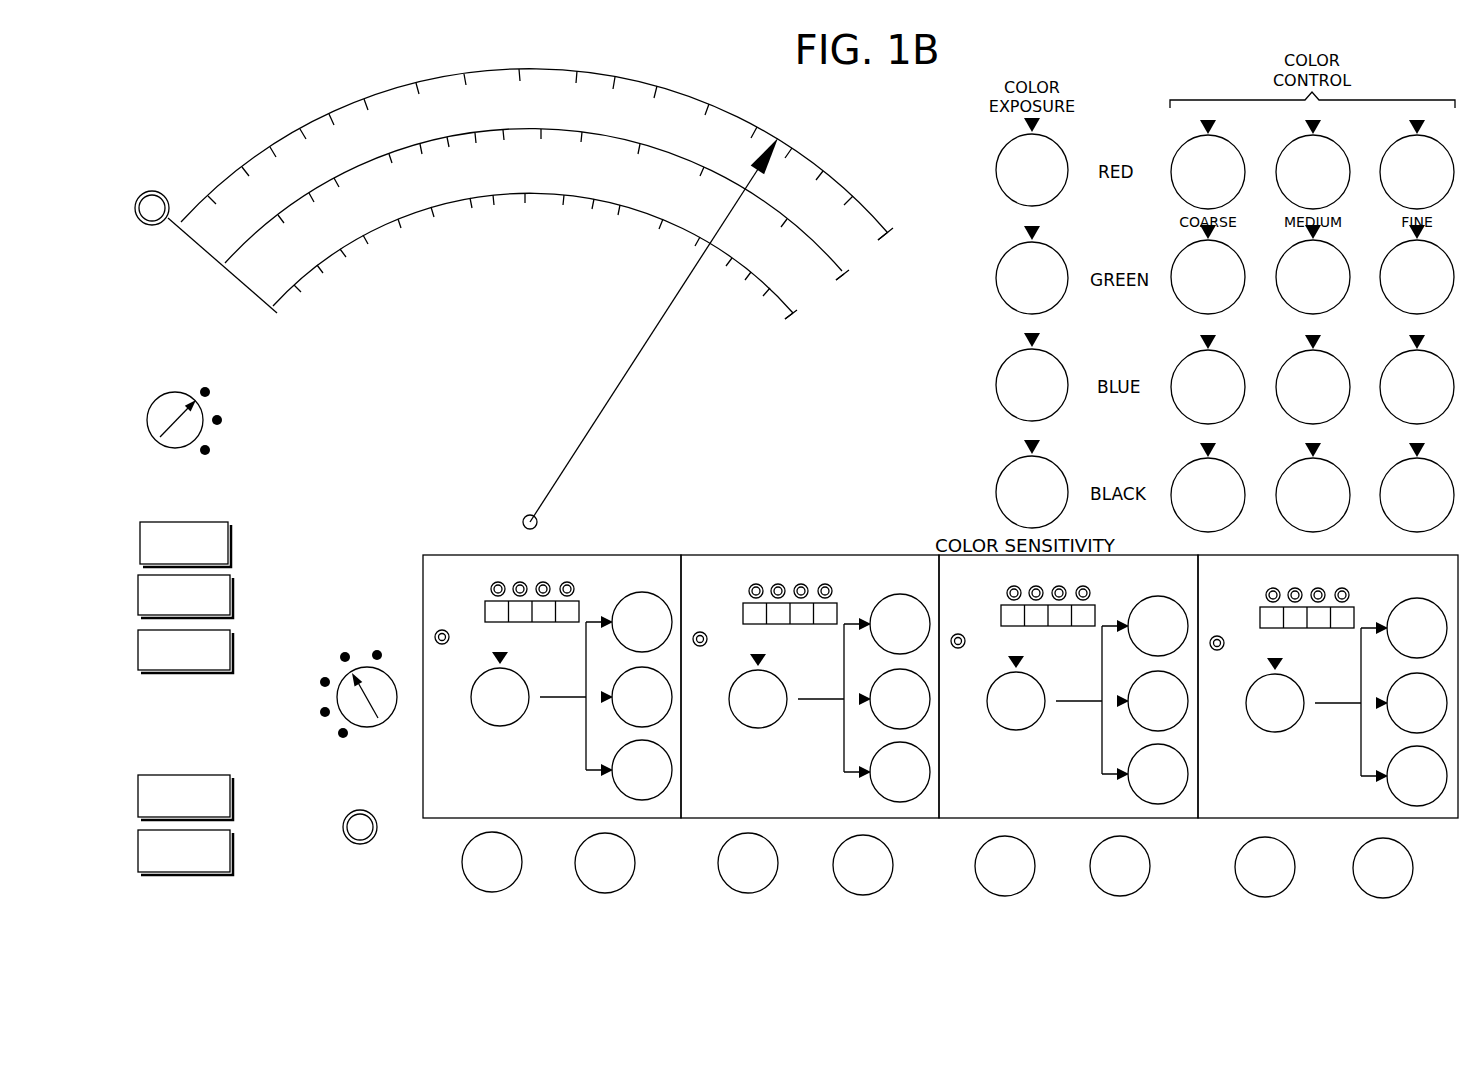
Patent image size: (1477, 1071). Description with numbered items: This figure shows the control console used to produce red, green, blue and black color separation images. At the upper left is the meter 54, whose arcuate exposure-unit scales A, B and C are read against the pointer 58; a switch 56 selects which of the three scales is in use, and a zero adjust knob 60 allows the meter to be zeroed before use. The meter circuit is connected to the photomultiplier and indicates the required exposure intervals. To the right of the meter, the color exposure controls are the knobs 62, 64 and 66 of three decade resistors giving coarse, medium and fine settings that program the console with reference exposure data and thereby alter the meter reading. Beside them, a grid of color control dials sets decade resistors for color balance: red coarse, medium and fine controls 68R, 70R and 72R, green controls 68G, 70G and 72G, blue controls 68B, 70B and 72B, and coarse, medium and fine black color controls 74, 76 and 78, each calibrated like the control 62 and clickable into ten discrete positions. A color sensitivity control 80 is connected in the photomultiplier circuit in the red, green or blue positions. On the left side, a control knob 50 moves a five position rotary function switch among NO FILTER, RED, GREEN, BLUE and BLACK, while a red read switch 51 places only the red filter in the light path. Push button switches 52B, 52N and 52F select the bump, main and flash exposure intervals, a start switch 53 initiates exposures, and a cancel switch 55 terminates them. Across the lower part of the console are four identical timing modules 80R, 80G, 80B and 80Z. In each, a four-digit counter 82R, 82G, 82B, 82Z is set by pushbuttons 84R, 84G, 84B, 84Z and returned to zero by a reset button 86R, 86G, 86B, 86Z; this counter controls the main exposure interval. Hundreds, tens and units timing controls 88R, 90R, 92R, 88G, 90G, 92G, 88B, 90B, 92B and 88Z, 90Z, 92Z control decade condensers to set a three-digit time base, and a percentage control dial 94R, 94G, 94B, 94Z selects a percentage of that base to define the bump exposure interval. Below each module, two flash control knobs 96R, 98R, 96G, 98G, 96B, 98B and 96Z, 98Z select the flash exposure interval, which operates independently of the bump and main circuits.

The meter 54 is at (808, 146).
The switch 56 is at (165, 398).
The pointer 58 is at (652, 352).
The zero adjust knob 60 is at (150, 220).
The coarse color exposure control knob 62 is at (998, 172).
The medium color exposure control knob 64 is at (998, 285).
The fine color exposure control knob 66 is at (998, 390).
The color sensitivity control 80 is at (1000, 480).
The red coarse color balance control 68R is at (1187, 150).
The red medium color balance control 70R is at (1293, 145).
The red fine color balance control 72R is at (1395, 145).
The green coarse color balance control 68G is at (1182, 305).
The green medium color balance control 70G is at (1298, 305).
The green fine color balance control 72G is at (1395, 305).
The blue coarse color balance control 68B is at (1180, 410).
The blue medium color balance control 70B is at (1300, 415).
The blue fine color balance control 72B is at (1405, 417).
The coarse black color control 74 is at (1182, 475).
The medium black color control 76 is at (1290, 470).
The fine black color control 78 is at (1398, 472).
The bump push button switch 52B is at (232, 543).
The main push button switch 52N is at (232, 599).
The flash push button switch 52F is at (186, 672).
The start switch 53 is at (232, 798).
The cancel switch 55 is at (232, 858).
The control knob of rotary function switch 50 is at (387, 710).
The red read switch 51 is at (370, 821).
The red timing module 80R is at (456, 548).
The green timing module 80G is at (753, 550).
The blue timing module 80B is at (1143, 550).
The black timing module 80Z is at (1392, 553).
The reset button 86R is at (442, 629).
The pushbuttons 84R is at (567, 581).
The four-digit counter 82R is at (544, 623).
The percentage control dial 94R is at (480, 706).
The hundreds timing control 88R is at (645, 600).
The tens timing control 90R is at (663, 688).
The units timing control 92R is at (631, 790).
The reset button 86G is at (700, 631).
The pushbuttons 84G is at (825, 583).
The four-digit counter 82G is at (802, 625).
The percentage control dial 94G is at (738, 708).
The hundreds timing control 88G is at (903, 602).
The tens timing control 90G is at (921, 690).
The units timing control 92G is at (889, 792).
The reset button 86B is at (958, 633).
The pushbuttons 84B is at (1083, 585).
The four-digit counter 82B is at (1060, 627).
The percentage control dial 94B is at (996, 710).
The hundreds timing control 88B is at (1161, 604).
The tens timing control 90B is at (1179, 692).
The units timing control 92B is at (1147, 794).
The reset button 86Z is at (1217, 635).
The pushbuttons 84Z is at (1342, 587).
The four-digit counter 82Z is at (1319, 629).
The percentage control dial 94Z is at (1255, 712).
The hundreds timing control 88Z is at (1420, 606).
The tens timing control 90Z is at (1414, 690).
The units timing control 92Z is at (1406, 796).
The flash control knob 96R is at (475, 869).
The flash control knob 98R is at (587, 860).
The flash control knob 96G is at (730, 868).
The flash control knob 98G is at (848, 870).
The flash control knob 96B is at (988, 872).
The flash control knob 98B is at (1104, 872).
The flash control knob 96Z is at (1247, 872).
The flash control knob 98Z is at (1365, 873).